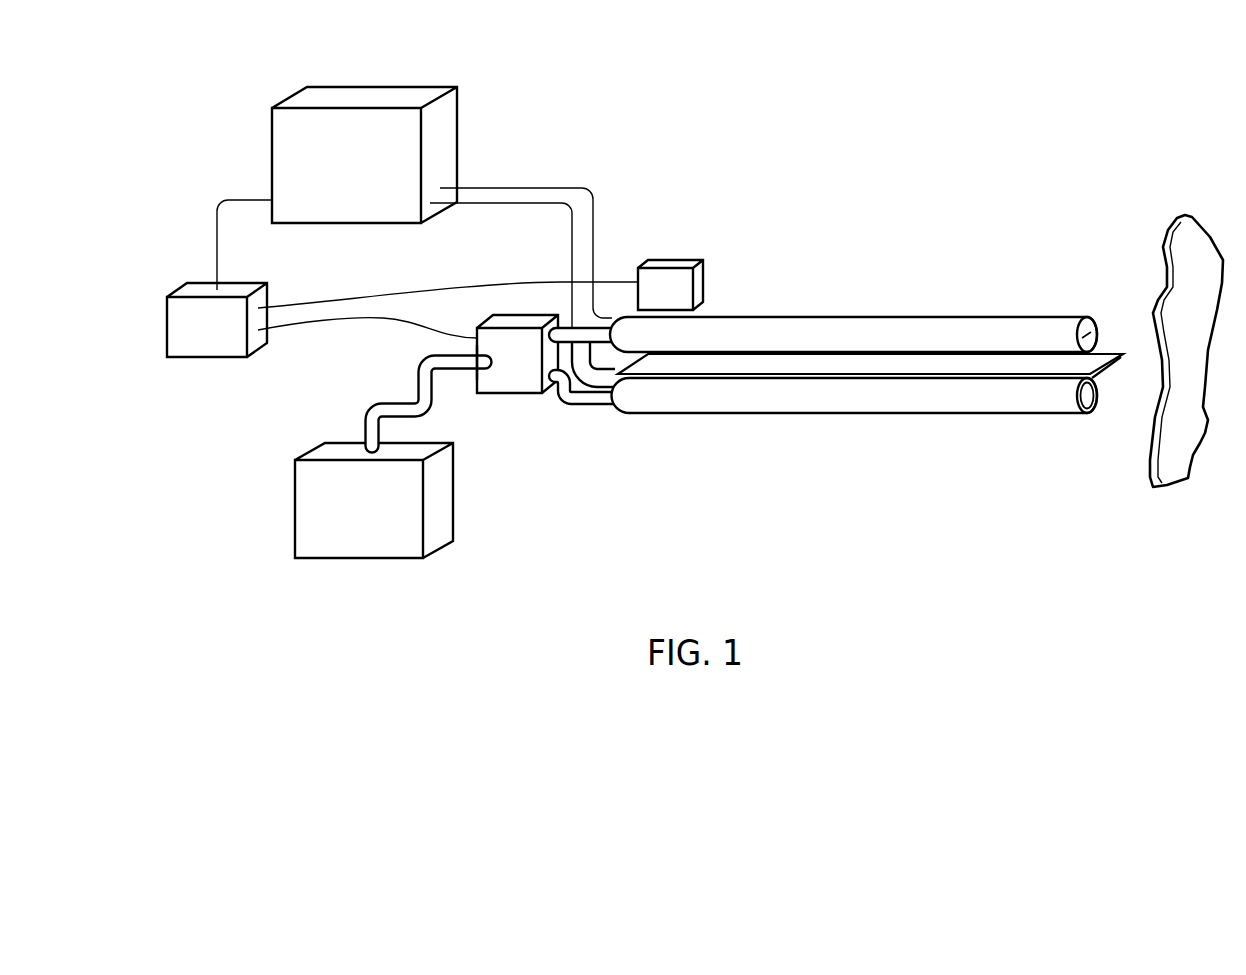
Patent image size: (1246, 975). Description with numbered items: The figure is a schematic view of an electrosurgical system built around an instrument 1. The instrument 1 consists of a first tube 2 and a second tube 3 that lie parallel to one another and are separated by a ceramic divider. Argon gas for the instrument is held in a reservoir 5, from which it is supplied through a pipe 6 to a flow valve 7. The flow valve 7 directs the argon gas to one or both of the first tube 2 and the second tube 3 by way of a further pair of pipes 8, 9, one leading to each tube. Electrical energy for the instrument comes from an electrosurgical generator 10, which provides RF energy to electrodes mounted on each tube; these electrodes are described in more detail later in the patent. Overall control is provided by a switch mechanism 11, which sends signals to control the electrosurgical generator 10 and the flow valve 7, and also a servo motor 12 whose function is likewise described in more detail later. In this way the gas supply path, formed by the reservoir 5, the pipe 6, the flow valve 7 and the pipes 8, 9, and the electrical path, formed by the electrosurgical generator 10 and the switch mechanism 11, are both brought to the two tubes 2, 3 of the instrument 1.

The instrument 1 is at (912, 258).
The first tube 2 is at (976, 333).
The second tube 3 is at (878, 400).
The reservoir 5 is at (313, 505).
The pipe 6 is at (366, 416).
The flow valve 7 is at (513, 378).
The pipe 8 is at (568, 330).
The pipe 9 is at (581, 400).
The electrosurgical generator 10 is at (375, 97).
The switch mechanism 11 is at (178, 317).
The servo motor 12 is at (674, 281).